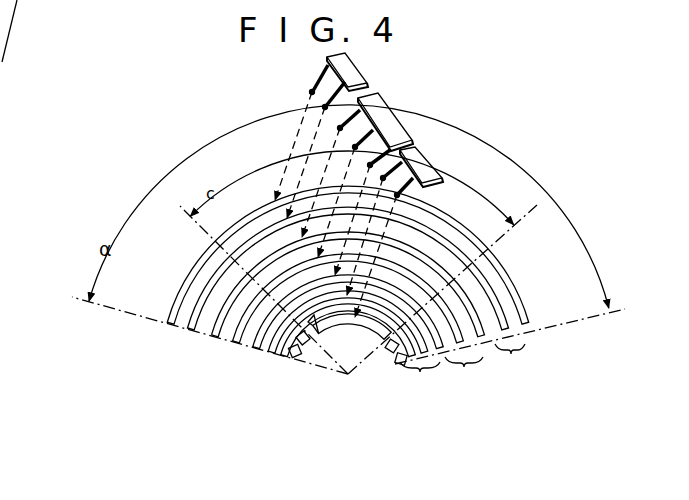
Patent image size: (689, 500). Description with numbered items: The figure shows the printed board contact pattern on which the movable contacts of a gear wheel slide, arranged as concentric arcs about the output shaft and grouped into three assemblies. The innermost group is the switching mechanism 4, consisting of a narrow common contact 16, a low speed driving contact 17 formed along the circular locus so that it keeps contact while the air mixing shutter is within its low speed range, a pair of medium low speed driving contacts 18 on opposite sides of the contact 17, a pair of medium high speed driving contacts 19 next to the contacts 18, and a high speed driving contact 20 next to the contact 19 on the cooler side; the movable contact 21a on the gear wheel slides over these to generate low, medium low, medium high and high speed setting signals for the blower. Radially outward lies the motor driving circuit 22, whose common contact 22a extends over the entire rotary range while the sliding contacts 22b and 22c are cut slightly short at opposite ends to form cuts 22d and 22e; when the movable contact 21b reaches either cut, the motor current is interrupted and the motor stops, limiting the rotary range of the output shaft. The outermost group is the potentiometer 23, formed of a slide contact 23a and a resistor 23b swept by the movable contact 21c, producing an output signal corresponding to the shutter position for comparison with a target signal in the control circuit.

The switching mechanism 4 is at (426, 395).
The common contact 16 is at (316, 335).
The low speed driving contact 17 is at (322, 338).
The medium low speed driving contacts 18 is at (306, 345).
The medium high speed driving contacts 19 is at (296, 357).
The high speed driving contact 20 is at (284, 356).
The movable contact 21a is at (430, 170).
The movable contact 21b is at (396, 118).
The movable contact 21c is at (364, 77).
The motor driving circuit 22 is at (480, 387).
The common contact 22a is at (214, 336).
The sliding contact 22b is at (236, 342).
The sliding contact 22c is at (256, 348).
The cut 22d is at (272, 352).
The cut 22e is at (478, 340).
The potentiometer 23 is at (530, 373).
The slide contact 23a is at (171, 312).
The resistor 23b is at (191, 329).